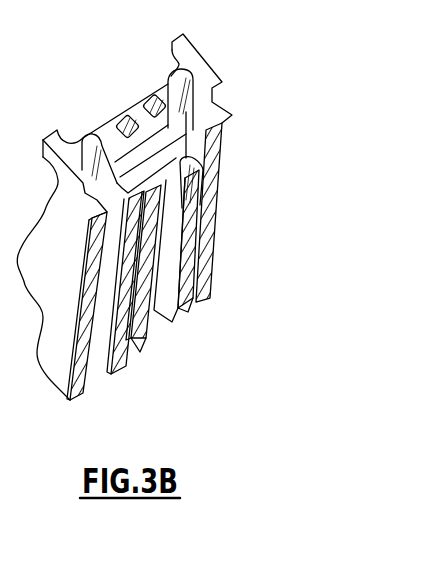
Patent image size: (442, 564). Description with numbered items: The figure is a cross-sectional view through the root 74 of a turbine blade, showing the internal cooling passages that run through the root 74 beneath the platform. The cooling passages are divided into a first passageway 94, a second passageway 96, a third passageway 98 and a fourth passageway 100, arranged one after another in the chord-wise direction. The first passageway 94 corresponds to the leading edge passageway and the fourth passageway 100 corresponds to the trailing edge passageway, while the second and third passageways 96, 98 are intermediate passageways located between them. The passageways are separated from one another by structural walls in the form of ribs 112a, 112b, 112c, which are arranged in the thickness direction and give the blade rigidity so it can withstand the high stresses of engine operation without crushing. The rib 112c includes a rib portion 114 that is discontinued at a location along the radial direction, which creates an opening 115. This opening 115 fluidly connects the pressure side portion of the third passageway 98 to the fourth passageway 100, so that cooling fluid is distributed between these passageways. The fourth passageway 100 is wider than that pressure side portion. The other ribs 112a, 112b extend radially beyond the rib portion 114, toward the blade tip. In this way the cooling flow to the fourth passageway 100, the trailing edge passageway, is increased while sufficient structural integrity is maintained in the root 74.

The root 74 is at (259, 126).
The first passageway 94 is at (77, 134).
The second passageway 96 is at (112, 106).
The third passageway 98 is at (141, 86).
The fourth passageway 100 is at (171, 70).
The rib 112a is at (113, 362).
The rib 112b is at (148, 337).
The rib 112c is at (185, 312).
The rib portion 114 is at (193, 220).
The opening 115 is at (199, 155).